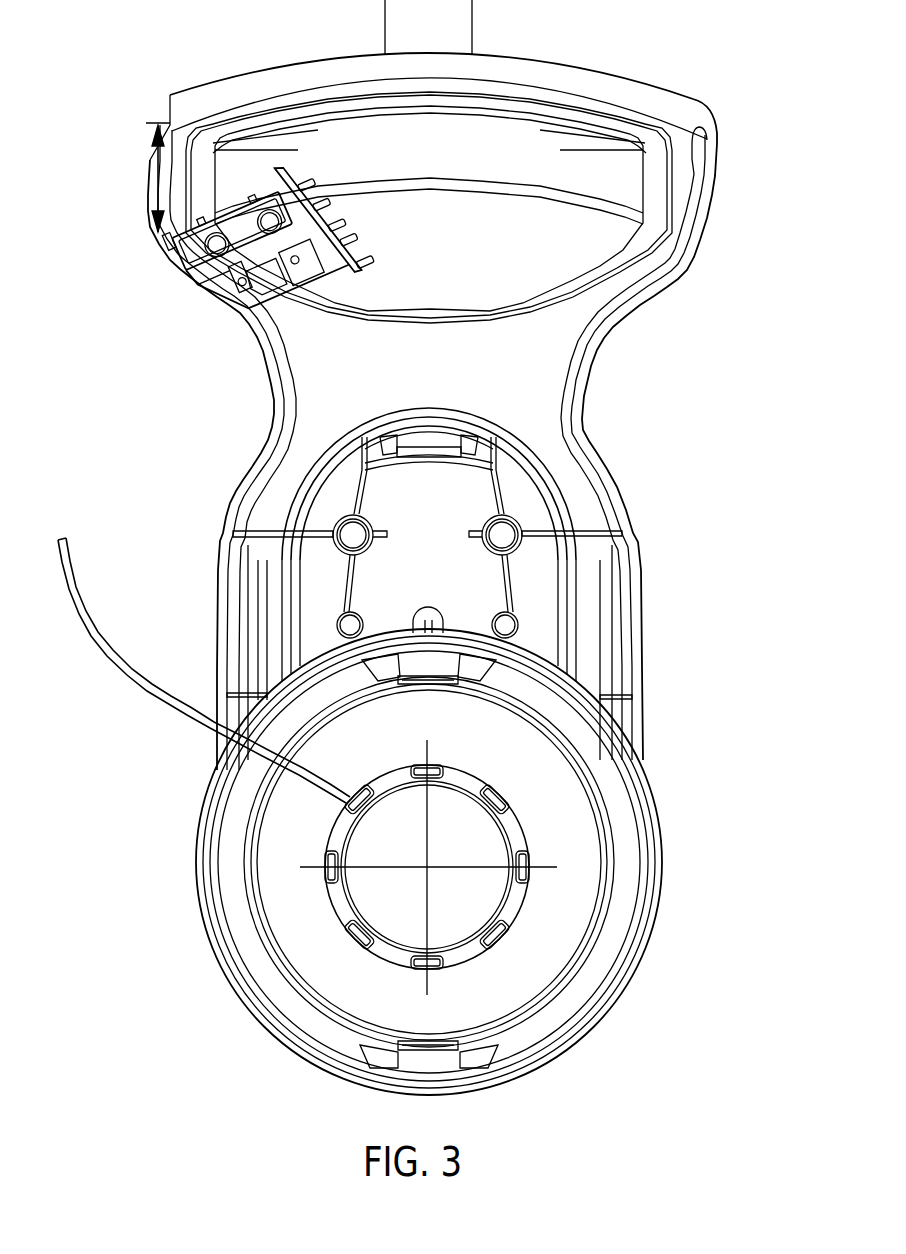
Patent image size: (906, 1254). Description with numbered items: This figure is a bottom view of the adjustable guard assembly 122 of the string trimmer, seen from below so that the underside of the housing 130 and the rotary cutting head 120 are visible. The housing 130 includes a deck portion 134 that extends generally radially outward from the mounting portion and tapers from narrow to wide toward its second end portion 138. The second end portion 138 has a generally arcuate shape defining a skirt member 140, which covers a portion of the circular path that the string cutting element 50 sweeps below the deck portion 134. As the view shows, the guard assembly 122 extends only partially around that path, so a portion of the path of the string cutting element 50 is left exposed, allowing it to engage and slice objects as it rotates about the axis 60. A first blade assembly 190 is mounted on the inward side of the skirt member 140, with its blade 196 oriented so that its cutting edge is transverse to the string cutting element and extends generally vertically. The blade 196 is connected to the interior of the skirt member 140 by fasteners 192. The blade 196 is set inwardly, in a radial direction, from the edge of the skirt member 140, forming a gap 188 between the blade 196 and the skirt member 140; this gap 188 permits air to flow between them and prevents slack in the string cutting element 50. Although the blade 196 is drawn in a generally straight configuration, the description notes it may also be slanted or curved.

The string cutting element 50 is at (196, 726).
The axis 60 is at (427, 867).
The rotary cutting head 120 is at (280, 895).
The guard assembly 122 is at (716, 224).
The housing 130 is at (602, 420).
The deck portion 134 is at (268, 385).
The second end portion 138 is at (255, 328).
The skirt member 140 is at (668, 207).
The gap 188 is at (154, 168).
The first blade assembly 190 is at (172, 257).
The fasteners 192 is at (238, 286).
The blade 196 is at (160, 226).